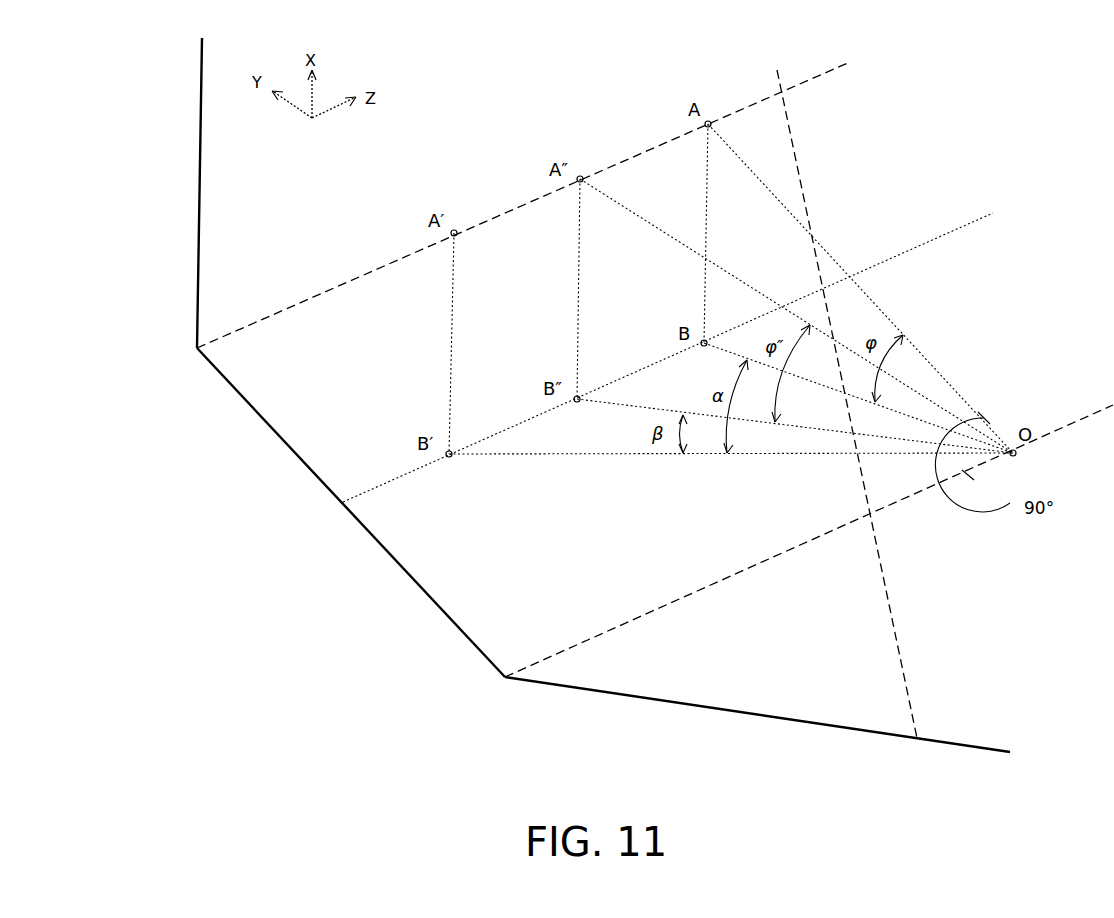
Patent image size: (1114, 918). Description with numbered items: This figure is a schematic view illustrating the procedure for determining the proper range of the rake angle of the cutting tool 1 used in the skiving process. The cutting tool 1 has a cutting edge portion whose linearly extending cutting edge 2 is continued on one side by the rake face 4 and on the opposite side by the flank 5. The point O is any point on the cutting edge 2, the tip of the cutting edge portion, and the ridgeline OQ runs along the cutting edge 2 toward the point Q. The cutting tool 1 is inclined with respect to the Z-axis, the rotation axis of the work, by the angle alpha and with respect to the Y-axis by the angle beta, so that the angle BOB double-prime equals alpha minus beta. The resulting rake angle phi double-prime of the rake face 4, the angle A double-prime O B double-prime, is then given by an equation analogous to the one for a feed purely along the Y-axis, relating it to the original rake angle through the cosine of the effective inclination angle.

The cutting tool 1 is at (193, 125).
The cutting edge 2 is at (503, 680).
The rake face 4 is at (295, 460).
The flank 5 is at (767, 715).